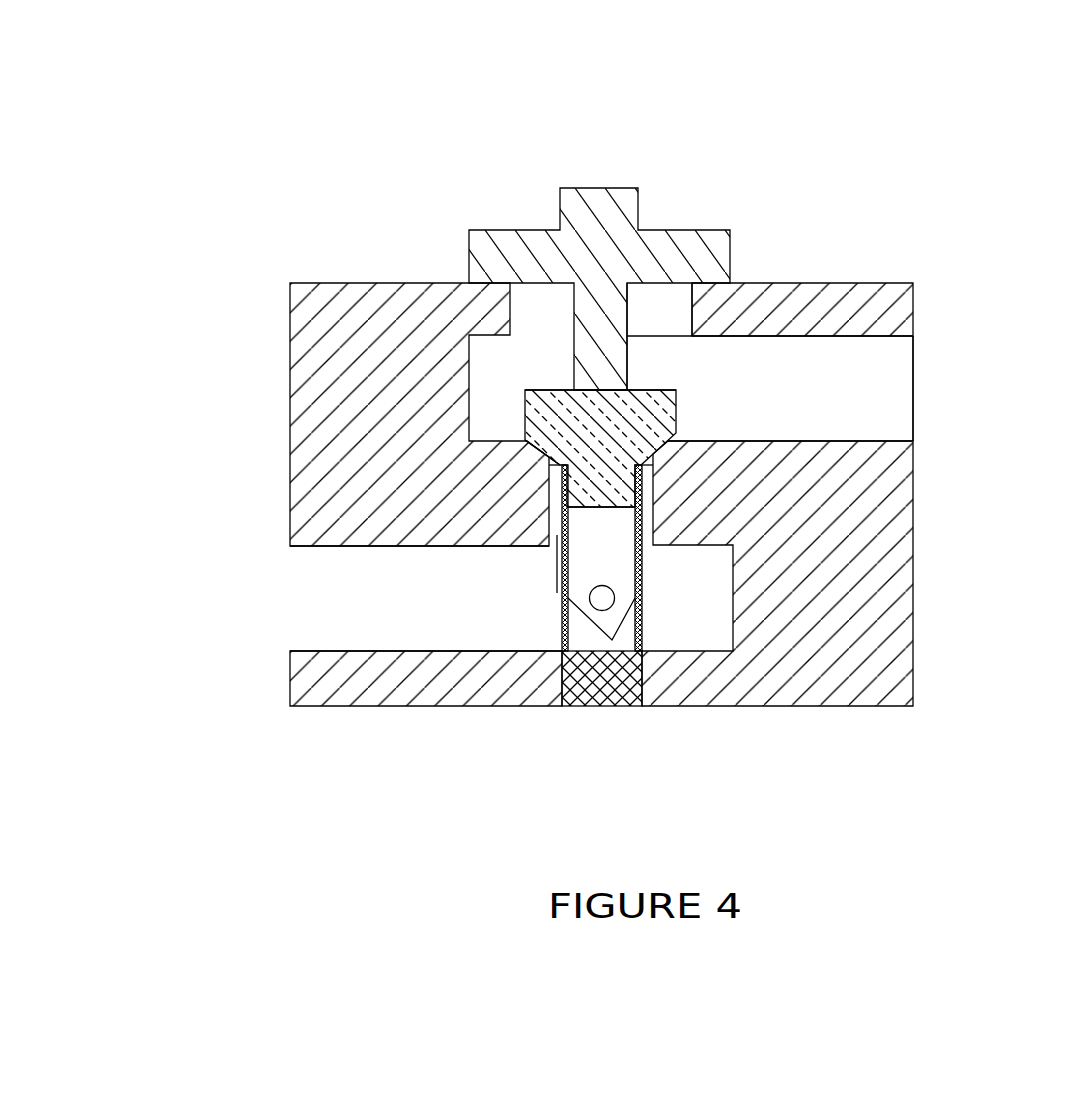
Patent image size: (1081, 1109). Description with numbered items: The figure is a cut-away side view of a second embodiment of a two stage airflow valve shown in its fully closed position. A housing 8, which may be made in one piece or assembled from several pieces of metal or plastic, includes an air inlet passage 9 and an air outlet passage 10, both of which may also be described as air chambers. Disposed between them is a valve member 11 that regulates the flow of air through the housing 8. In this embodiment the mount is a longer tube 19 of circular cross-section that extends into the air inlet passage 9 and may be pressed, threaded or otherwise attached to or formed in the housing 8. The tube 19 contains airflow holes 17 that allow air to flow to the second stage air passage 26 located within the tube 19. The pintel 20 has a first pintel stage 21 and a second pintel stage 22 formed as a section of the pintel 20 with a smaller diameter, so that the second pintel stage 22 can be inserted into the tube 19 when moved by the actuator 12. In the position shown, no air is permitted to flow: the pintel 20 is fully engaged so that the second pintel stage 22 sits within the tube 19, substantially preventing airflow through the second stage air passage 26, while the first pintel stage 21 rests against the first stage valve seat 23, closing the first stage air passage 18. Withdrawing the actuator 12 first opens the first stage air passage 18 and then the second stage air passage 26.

The housing 8 is at (672, 540).
The air inlet passage 9 is at (352, 683).
The air outlet passage 10 is at (793, 326).
The valve member 11 is at (789, 273).
The actuator 12 is at (626, 221).
The airflow holes 17 is at (641, 737).
The first stage air passage 18 is at (518, 630).
The tube 19 is at (567, 612).
The pintel 20 is at (462, 263).
The first pintel stage 21 is at (316, 466).
The second pintel stage 22 is at (463, 635).
The first stage valve seat 23 is at (792, 515).
The second stage air passage 26 is at (674, 710).